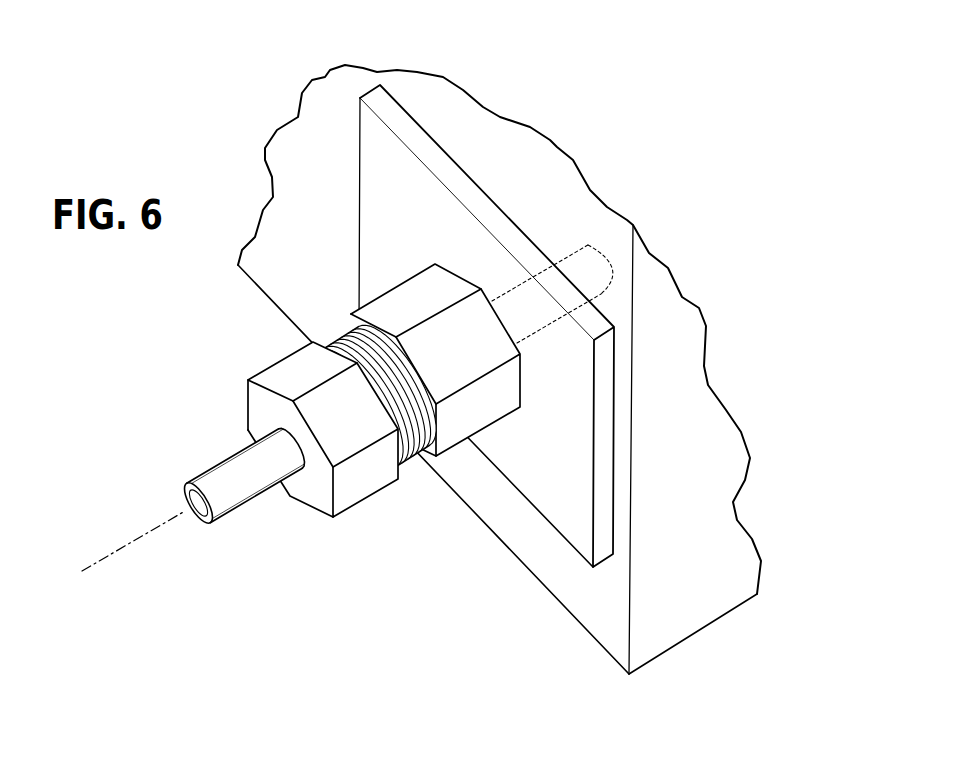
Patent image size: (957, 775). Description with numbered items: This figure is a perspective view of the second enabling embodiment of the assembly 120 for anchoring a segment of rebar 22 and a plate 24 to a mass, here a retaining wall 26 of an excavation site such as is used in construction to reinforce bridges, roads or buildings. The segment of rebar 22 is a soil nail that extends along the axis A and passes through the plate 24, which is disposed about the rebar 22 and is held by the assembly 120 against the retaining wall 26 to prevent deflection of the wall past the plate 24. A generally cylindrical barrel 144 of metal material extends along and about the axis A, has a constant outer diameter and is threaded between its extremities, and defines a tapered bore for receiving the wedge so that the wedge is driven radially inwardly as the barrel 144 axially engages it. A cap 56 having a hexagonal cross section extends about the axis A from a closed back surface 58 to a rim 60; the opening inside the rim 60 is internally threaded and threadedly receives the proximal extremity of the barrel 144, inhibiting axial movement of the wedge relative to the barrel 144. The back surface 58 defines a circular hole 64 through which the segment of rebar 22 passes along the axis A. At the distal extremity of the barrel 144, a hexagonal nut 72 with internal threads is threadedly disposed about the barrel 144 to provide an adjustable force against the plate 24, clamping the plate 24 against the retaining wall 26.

The assembly 120 is at (607, 181).
The retaining wall 26 is at (704, 603).
The plate 24 is at (553, 518).
The barrel 144 is at (408, 461).
The nut 72 is at (372, 293).
The rim 60 is at (320, 343).
The cap 56 is at (357, 507).
The back surface 58 is at (318, 512).
The segment of rebar 22 is at (222, 476).
The hole 64 is at (268, 440).
The axis A is at (127, 529).